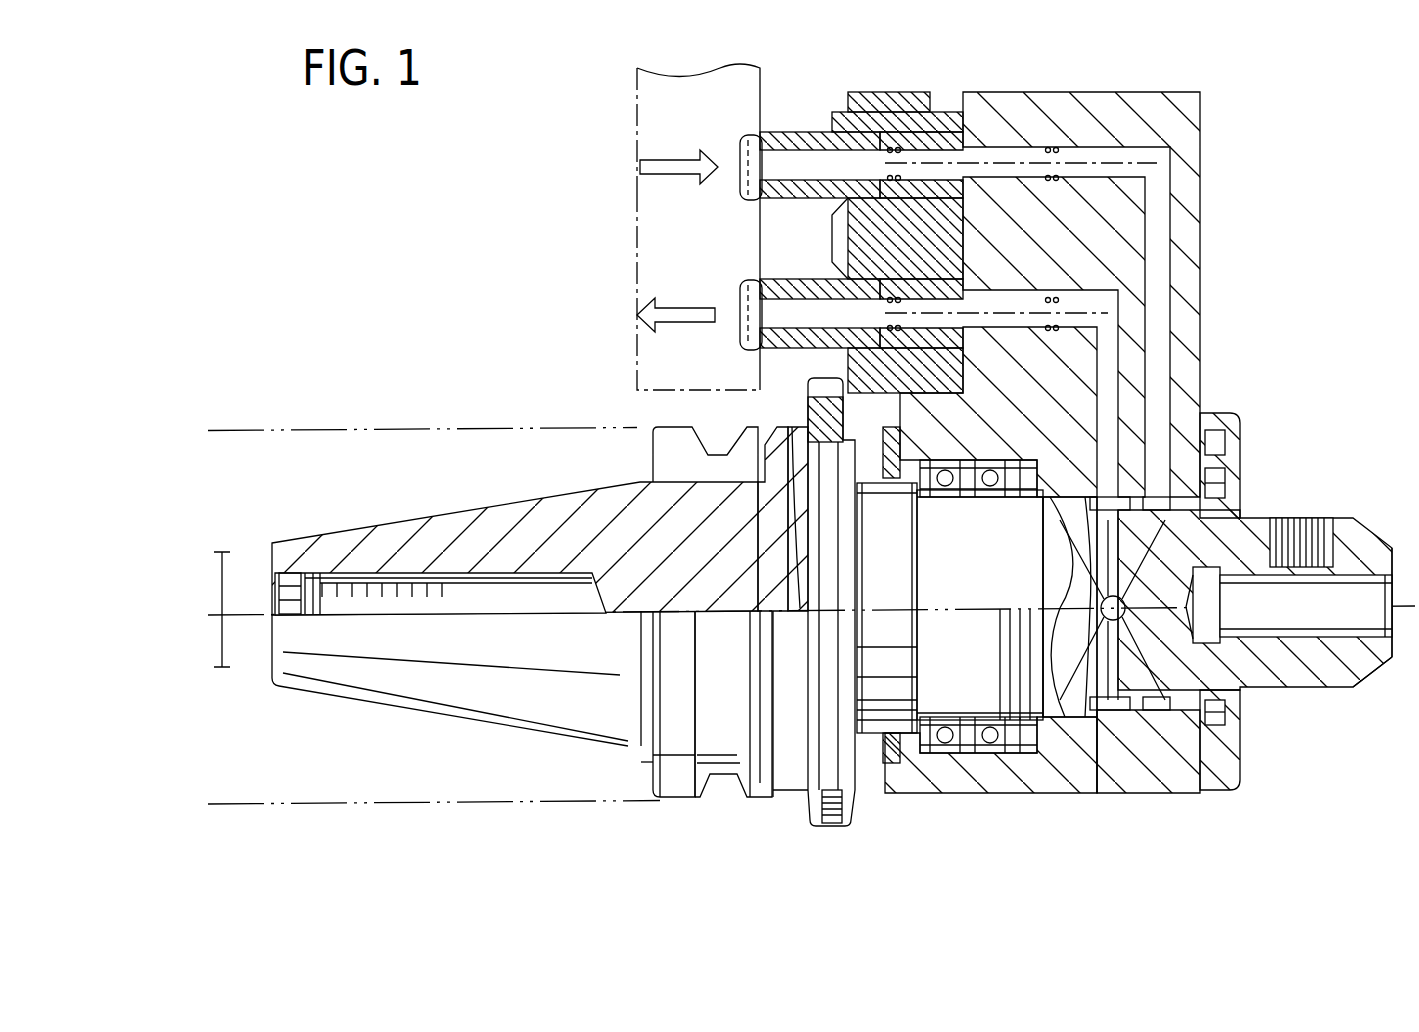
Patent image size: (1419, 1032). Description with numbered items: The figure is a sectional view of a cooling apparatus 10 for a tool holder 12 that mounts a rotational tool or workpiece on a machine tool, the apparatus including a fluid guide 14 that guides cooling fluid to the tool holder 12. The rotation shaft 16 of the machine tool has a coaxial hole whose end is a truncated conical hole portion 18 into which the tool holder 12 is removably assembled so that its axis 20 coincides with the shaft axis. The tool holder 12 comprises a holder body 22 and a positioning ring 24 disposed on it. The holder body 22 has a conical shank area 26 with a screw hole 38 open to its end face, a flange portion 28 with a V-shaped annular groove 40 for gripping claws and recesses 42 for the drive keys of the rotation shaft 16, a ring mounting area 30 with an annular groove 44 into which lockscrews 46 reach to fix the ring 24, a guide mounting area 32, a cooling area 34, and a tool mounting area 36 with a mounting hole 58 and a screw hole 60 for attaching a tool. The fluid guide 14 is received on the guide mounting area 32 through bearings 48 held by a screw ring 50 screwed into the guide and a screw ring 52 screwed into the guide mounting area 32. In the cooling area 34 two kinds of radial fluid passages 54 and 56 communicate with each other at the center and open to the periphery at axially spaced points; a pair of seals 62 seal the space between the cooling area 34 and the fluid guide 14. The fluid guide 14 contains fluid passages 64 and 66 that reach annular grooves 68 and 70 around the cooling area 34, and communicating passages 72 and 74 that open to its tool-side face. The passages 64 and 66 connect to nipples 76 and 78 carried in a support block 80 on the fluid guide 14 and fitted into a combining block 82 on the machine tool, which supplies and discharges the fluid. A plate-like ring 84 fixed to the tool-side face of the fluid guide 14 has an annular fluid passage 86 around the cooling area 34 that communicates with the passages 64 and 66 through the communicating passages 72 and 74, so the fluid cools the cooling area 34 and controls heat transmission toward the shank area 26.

The cooling apparatus 10 is at (1338, 268).
The tool holder 12 is at (1372, 522).
The fluid guide 14 is at (1204, 192).
The rotation shaft 16 is at (276, 428).
The hole portion 18 is at (395, 523).
The axis 20 is at (489, 628).
The holder body 22 is at (655, 803).
The positioning ring 24 is at (803, 802).
The shank area 26 is at (512, 705).
The flange portion 28 is at (662, 758).
The ring mounting area 30 is at (858, 790).
The guide mounting area 32 is at (950, 762).
The cooling area 34 is at (1222, 642).
The tool mounting area 36 is at (1322, 672).
The screw hole 38 is at (440, 572).
The annular groove 40 is at (705, 797).
The recesses 42 is at (655, 462).
The annular groove 44 is at (795, 790).
The lockscrews 46 is at (830, 815).
The bearings 48 is at (1002, 762).
The screw ring 50 is at (910, 780).
The screw ring 52 is at (1040, 762).
The fluid passage 54 is at (1122, 705).
The fluid passage 56 is at (1082, 722).
The mounting hole 58 is at (1380, 660).
The screw hole 60 is at (1300, 516).
The seals 62 is at (1080, 482).
The fluid passage 64 is at (1162, 226).
The fluid passage 66 is at (1112, 345).
The annular groove 68 is at (1218, 480).
The annular groove 70 is at (1216, 433).
The communicating passage 72 is at (1066, 486).
The communicating passage 74 is at (1212, 728).
The nipple 76 is at (790, 132).
The nipple 78 is at (790, 280).
The support block 80 is at (905, 92).
The combining block 82 is at (640, 95).
The plate-like ring 84 is at (1246, 420).
The annular fluid passage 86 is at (1222, 762).